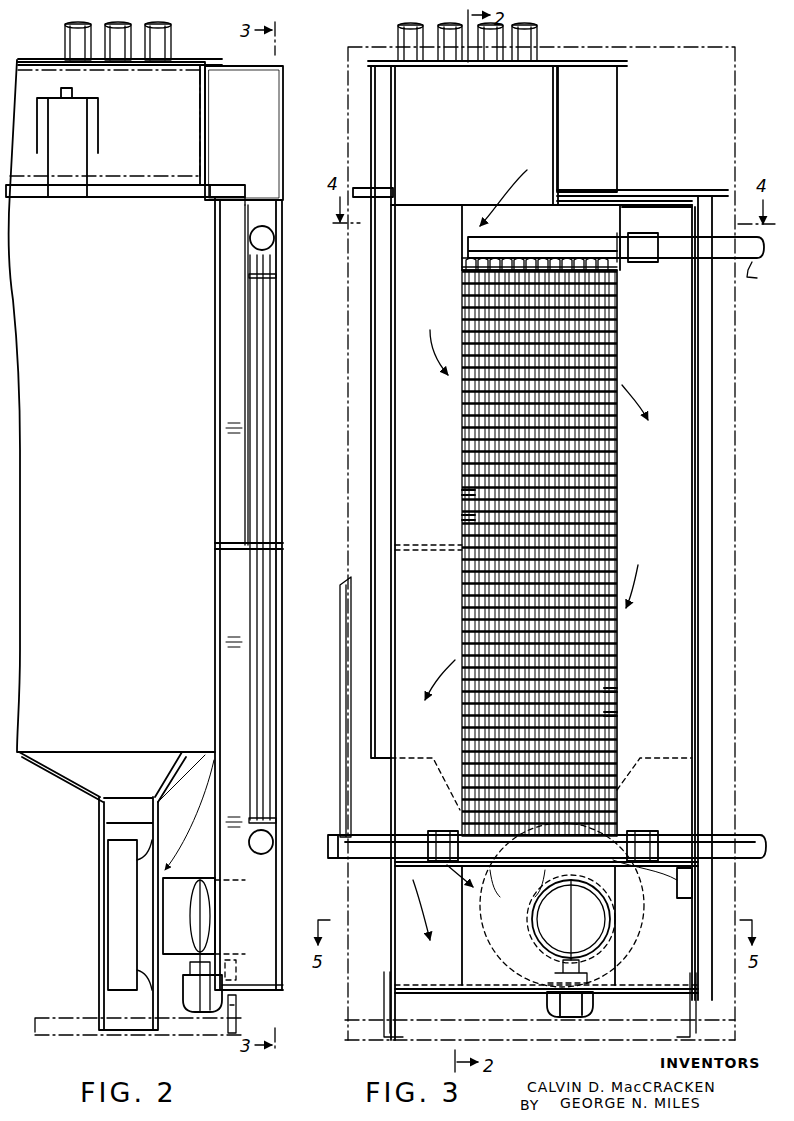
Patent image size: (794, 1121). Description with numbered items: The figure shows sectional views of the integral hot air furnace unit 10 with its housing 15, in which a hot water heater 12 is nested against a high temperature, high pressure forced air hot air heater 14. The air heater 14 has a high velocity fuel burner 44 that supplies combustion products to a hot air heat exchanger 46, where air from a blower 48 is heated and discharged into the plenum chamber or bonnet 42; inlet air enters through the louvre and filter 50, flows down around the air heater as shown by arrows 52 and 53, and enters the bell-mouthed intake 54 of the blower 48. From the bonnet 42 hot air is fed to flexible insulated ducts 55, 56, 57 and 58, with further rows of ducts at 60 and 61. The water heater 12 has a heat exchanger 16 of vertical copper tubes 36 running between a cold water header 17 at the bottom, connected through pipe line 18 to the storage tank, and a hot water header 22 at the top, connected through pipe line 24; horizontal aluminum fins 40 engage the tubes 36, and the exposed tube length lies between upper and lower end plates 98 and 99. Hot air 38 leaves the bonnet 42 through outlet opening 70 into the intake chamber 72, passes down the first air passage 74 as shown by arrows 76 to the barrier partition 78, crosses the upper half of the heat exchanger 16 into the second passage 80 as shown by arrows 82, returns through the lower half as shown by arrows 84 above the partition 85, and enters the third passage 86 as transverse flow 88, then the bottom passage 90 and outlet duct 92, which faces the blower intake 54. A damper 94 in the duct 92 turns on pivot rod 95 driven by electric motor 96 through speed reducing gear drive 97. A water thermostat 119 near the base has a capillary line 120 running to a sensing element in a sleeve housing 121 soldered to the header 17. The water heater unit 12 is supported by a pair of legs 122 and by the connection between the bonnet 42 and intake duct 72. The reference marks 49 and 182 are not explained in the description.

In FIG. 2, the hot air furnace unit 10 is at (294, 132).
In FIG. 3, the hot air furnace unit 10 is at (742, 468).
In FIG. 2, the hot water heater 12 is at (282, 406).
In FIG. 3, the hot water heater 12 is at (700, 396).
In FIG. 2, the hot air heater 14 is at (216, 186).
In FIG. 3, the hot air heater 14 is at (716, 518).
In FIG. 3, the housing 15 is at (350, 528).
In FIG. 2, the heat exchanger 16 is at (273, 482).
In FIG. 3, the heat exchanger 16 is at (622, 298).
In FIG. 2, the cold water header 17 is at (276, 850).
In FIG. 3, the cold water header 17 is at (517, 883).
In FIG. 3, the pipe line 18 is at (756, 835).
In FIG. 2, the hot water header 22 is at (266, 236).
In FIG. 3, the hot water header 22 is at (510, 237).
In FIG. 3, the pipe line 24 is at (763, 276).
In FIG. 2, the heat exchange tubes 36 is at (258, 796).
In FIG. 3, the heat exchange tubes 36 is at (472, 516).
In FIG. 2, the hot air 38 is at (238, 228).
In FIG. 3, the hot air 38 is at (428, 250).
In FIG. 3, the heat transfer fins 40 is at (464, 492).
In FIG. 2, the plenum chamber 42 is at (194, 60).
In FIG. 3, the plenum chamber 42 is at (614, 136).
In FIG. 2, the fuel burner 44 is at (88, 168).
In FIG. 2, the hot air heat exchanger 46 is at (48, 745).
In FIG. 2, the blower 48 is at (100, 900).
In FIG. 3, the blower 48 is at (672, 878).
In FIG. 3, the air flow 49 is at (362, 712).
In FIG. 3, the inlet louvre and air filter 50 is at (344, 592).
In FIG. 2, the arrows 52 is at (208, 800).
In FIG. 3, the arrows 53 is at (390, 883).
In FIG. 2, the bell-mouthed intake 54 is at (178, 812).
In FIG. 2, the flexible insulated duct 55 is at (172, 40).
In FIG. 3, the flexible insulated duct 55 is at (402, 36).
In FIG. 3, the flexible insulated duct 56 is at (452, 28).
In FIG. 3, the flexible insulated duct 57 is at (510, 30).
In FIG. 3, the flexible insulated duct 58 is at (540, 42).
In FIG. 2, the second row of ducts 60 is at (133, 28).
In FIG. 2, the third row of ducts 61 is at (62, 34).
In FIG. 2, the outlet opening 70 is at (206, 135).
In FIG. 3, the outlet opening 70 is at (446, 235).
In FIG. 2, the intake chamber 72 is at (284, 98).
In FIG. 3, the intake chamber 72 is at (558, 130).
In FIG. 2, the first vertically extending air passage 74 is at (230, 410).
In FIG. 3, the first vertically extending air passage 74 is at (396, 352).
In FIG. 2, the arrows 76 is at (258, 318).
In FIG. 3, the arrows 76 is at (450, 318).
In FIG. 2, the barrier partition 78 is at (222, 543).
In FIG. 3, the barrier partition 78 is at (408, 545).
In FIG. 3, the second vertically extending air passage 80 is at (700, 575).
In FIG. 3, the arrows 82 is at (622, 315).
In FIG. 3, the arrows 84 is at (648, 620).
In FIG. 3, the partition 85 is at (660, 835).
In FIG. 2, the third vertical air passage 86 is at (262, 640).
In FIG. 3, the third vertical air passage 86 is at (396, 636).
In FIG. 2, the transverse air flow 88 is at (262, 572).
In FIG. 3, the transverse air flow 88 is at (412, 640).
In FIG. 2, the transverse bottom air passage 90 is at (272, 985).
In FIG. 3, the transverse bottom air passage 90 is at (490, 975).
In FIG. 2, the outlet duct 92 is at (190, 972).
In FIG. 3, the outlet duct 92 is at (545, 948).
In FIG. 2, the damper 94 is at (190, 878).
In FIG. 2, the pivot rod 95 is at (198, 914).
In FIG. 3, the pivot rod 95 is at (573, 918).
In FIG. 2, the electric motor 96 is at (185, 1004).
In FIG. 3, the electric motor 96 is at (593, 1008).
In FIG. 3, the speed reducing gear drive mechanism 97 is at (620, 970).
In FIG. 2, the upper end plate 98 is at (280, 278).
In FIG. 2, the lower end plate 99 is at (280, 812).
In FIG. 3, the water thermostat 119 is at (693, 885).
In FIG. 3, the capillary line 120 is at (668, 898).
In FIG. 3, the sleeve housing 121 is at (553, 918).
In FIG. 2, the legs 122 is at (228, 1032).
In FIG. 3, the legs 122 is at (386, 1028).
In FIG. 2, the phantom line 182 is at (205, 98).